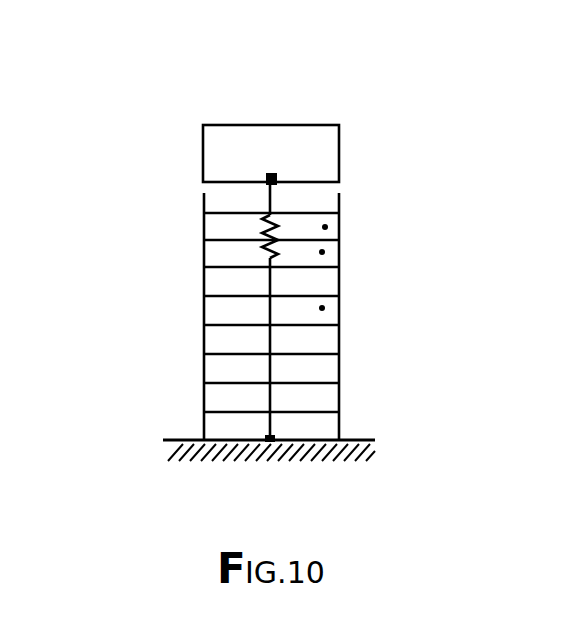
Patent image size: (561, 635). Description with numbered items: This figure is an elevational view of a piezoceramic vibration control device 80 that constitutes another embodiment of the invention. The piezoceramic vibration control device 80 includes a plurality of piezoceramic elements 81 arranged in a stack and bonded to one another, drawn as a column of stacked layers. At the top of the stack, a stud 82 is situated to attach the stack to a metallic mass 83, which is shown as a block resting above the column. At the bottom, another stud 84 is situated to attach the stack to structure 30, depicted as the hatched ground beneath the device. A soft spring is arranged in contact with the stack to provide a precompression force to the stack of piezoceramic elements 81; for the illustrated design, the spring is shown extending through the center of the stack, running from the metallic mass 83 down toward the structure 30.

The piezoceramic vibration control device 80 is at (147, 223).
The piezoceramic elements 81 is at (325, 227).
The stud 82 is at (283, 177).
The metallic mass 83 is at (345, 120).
The stud 84 is at (285, 438).
The structure 30 is at (163, 438).